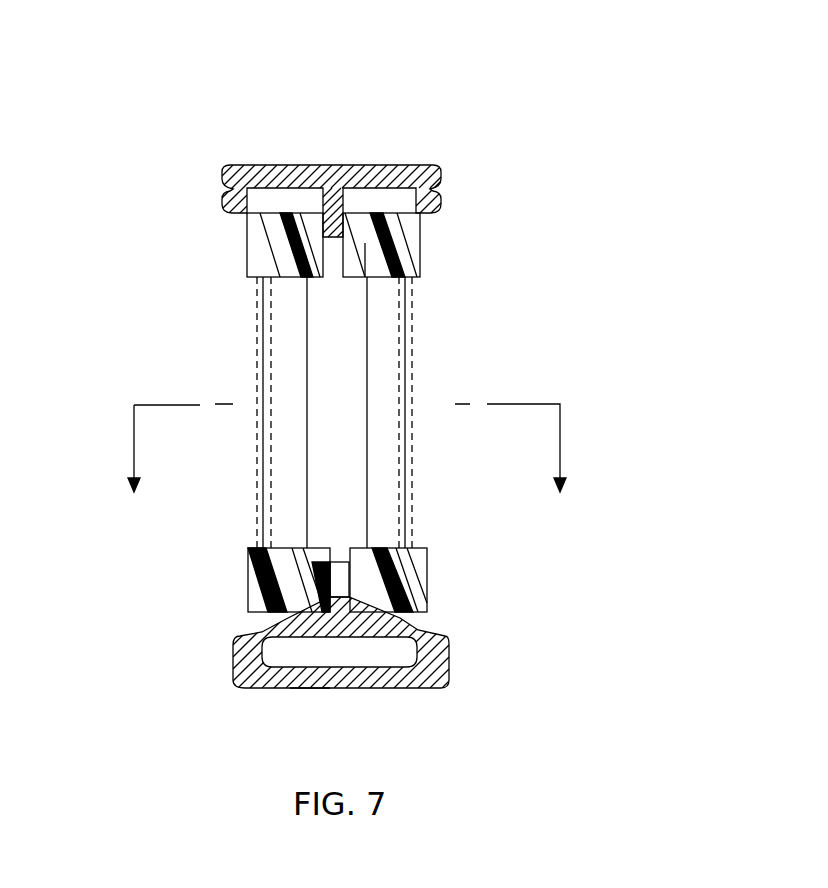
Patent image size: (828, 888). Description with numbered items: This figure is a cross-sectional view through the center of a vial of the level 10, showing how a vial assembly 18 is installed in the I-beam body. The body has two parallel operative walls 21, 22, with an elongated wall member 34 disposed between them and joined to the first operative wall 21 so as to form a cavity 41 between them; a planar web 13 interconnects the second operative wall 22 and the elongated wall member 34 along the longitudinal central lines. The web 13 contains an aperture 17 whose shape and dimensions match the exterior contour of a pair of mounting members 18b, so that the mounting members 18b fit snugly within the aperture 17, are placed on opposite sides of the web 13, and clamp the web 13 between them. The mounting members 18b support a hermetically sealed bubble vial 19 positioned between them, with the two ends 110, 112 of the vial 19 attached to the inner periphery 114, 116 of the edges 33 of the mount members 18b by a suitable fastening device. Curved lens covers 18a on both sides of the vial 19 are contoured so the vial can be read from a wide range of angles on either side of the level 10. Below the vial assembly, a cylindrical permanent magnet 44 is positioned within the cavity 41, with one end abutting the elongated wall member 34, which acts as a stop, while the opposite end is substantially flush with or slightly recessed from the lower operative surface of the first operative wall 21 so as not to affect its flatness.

The level 10 is at (158, 108).
The planar web 13 is at (342, 215).
The aperture 17 is at (357, 278).
The vial assembly 18 is at (237, 270).
The lens cover 18a is at (262, 440).
The mounting member 18b is at (262, 213).
The bubble vial 19 is at (368, 372).
The first operative wall 21 is at (272, 694).
The second operative wall 22 is at (287, 165).
The edge of mount member 33 is at (424, 224).
The elongated wall member 34 is at (265, 622).
The cavity 41 is at (405, 637).
The cylindrical permanent magnet 44 is at (298, 698).
The end of bubble vial 110 is at (422, 224).
The end of bubble vial 112 is at (420, 587).
The inner periphery 114 is at (345, 293).
The inner periphery 116 is at (355, 548).